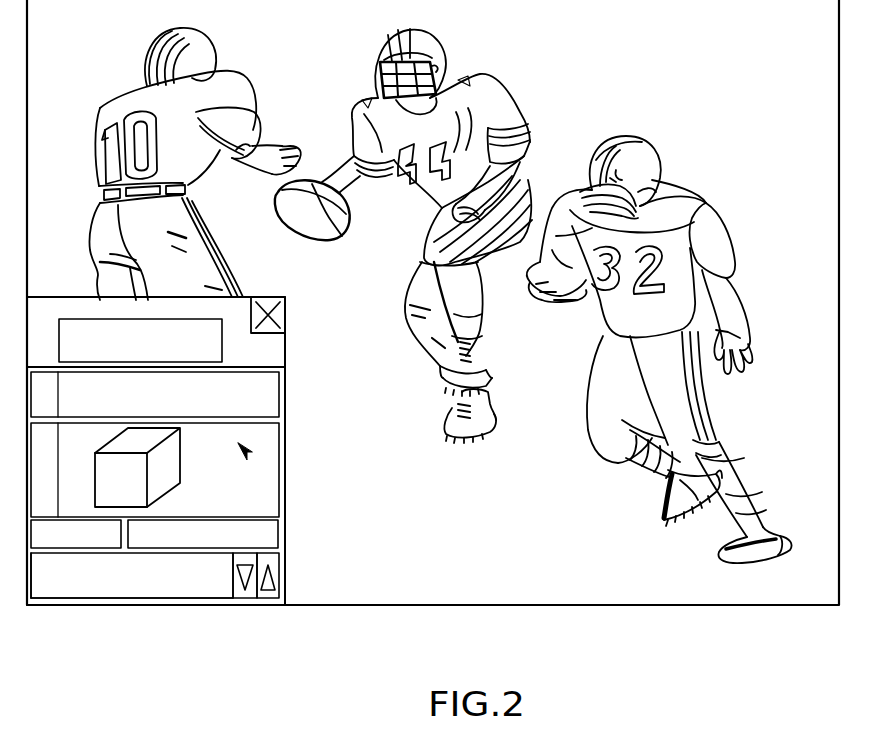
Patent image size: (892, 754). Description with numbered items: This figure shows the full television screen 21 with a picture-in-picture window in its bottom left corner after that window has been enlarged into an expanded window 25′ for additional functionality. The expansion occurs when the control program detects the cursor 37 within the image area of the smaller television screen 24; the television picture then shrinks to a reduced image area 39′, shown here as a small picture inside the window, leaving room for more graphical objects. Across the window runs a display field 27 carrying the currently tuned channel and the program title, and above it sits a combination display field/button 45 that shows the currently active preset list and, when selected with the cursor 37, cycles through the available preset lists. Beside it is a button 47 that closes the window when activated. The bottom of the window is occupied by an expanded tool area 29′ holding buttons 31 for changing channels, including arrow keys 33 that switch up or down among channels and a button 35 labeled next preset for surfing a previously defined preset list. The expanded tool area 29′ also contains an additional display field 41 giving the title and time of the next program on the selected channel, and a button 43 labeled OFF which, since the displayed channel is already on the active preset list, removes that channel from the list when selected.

The television screen 21 is at (836, 569).
The smaller television screen 24 is at (197, 492).
The expanded window 25′ is at (187, 612).
The display field 27 is at (272, 378).
The expanded tool area 29′ is at (60, 596).
The buttons 31 is at (278, 563).
The arrow keys 33 is at (248, 592).
The button 35 is at (88, 586).
The cursor 37 is at (258, 454).
The reduced image area 39′ is at (125, 510).
The additional display field 41 is at (276, 528).
The button 43 is at (37, 511).
The display field/button 45 is at (216, 343).
The button 47 is at (284, 300).